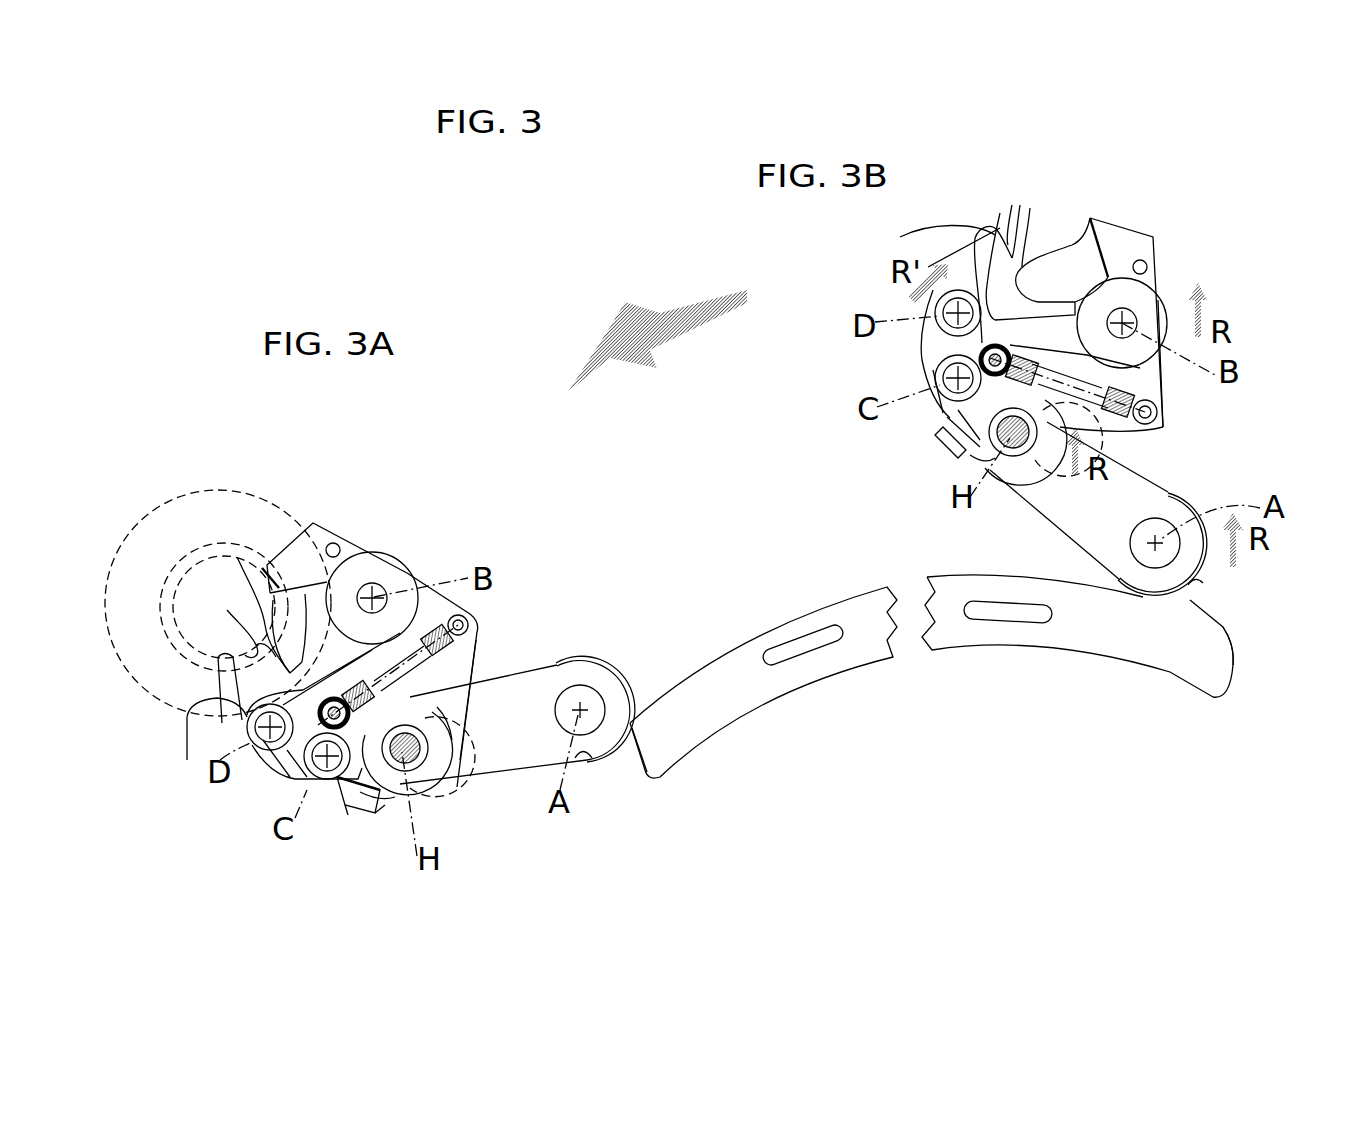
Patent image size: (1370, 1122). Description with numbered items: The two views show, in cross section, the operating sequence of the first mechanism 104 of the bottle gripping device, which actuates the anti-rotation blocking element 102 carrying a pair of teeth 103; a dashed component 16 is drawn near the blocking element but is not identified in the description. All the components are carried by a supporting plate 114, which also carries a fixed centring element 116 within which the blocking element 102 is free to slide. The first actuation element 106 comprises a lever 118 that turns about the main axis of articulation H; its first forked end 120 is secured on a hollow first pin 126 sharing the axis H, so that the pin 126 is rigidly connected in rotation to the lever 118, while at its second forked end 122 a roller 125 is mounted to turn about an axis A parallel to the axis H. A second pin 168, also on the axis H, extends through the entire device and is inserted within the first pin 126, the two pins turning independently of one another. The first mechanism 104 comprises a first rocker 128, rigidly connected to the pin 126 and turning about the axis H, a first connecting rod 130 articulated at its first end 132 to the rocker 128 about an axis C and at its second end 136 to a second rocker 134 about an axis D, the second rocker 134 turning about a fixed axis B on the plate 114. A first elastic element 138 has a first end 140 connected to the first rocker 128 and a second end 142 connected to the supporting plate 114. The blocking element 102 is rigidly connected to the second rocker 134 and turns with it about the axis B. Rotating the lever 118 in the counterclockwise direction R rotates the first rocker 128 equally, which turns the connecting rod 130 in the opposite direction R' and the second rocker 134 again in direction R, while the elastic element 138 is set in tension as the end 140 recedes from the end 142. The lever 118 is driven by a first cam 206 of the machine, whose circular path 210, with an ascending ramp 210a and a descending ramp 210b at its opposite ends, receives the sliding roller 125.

In FIG. 3A, the rear sprocket / hub axle 16 is at (189, 490).
In FIG. 3A, the anti-rotation blocking element 102 is at (237, 557).
In FIG. 3B, the anti-rotation blocking element 102 is at (985, 245).
In FIG. 3A, the teeth 103 is at (240, 620).
In FIG. 3B, the teeth 103 is at (1022, 267).
In FIG. 3A, the first mechanism 104 is at (470, 548).
In FIG. 3B, the first mechanism 104 is at (1250, 305).
In FIG. 3B, the first actuation element 106 is at (1010, 522).
In FIG. 3A, the supporting plate 114 is at (307, 547).
In FIG. 3B, the supporting plate 114 is at (1125, 245).
In FIG. 3A, the fixed centring element 116 is at (247, 568).
In FIG. 3B, the fixed centring element 116 is at (1048, 235).
In FIG. 3A, the lever 118 is at (533, 775).
In FIG. 3B, the lever 118 is at (1177, 480).
In FIG. 3A, the first forked end 120 is at (350, 805).
In FIG. 3B, the first forked end 120 is at (940, 410).
In FIG. 3A, the second forked end 122 is at (587, 762).
In FIG. 3B, the second forked end 122 is at (1190, 587).
In FIG. 3A, the roller 125 is at (613, 780).
In FIG. 3B, the roller 125 is at (1208, 568).
In FIG. 3A, the first pin 126 is at (443, 745).
In FIG. 3B, the first pin 126 is at (1090, 448).
In FIG. 3A, the first rocker 128 is at (380, 817).
In FIG. 3B, the first rocker 128 is at (980, 450).
In FIG. 3A, the first connecting rod 130 is at (290, 757).
In FIG. 3B, the first connecting rod 130 is at (937, 343).
In FIG. 3A, the first end 132 is at (353, 797).
In FIG. 3B, the first end 132 is at (935, 436).
In FIG. 3A, the second rocker 134 is at (353, 570).
In FIG. 3B, the second rocker 134 is at (1142, 297).
In FIG. 3A, the second end 136 is at (187, 760).
In FIG. 3B, the second end 136 is at (900, 237).
In FIG. 3A, the first elastic element 138 is at (440, 598).
In FIG. 3B, the first elastic element 138 is at (1172, 400).
In FIG. 3A, the first end 140 is at (415, 690).
In FIG. 3B, the first end 140 is at (980, 352).
In FIG. 3A, the second end 142 is at (468, 628).
In FIG. 3B, the second end 142 is at (1160, 413).
In FIG. 3A, the second pin 168 is at (450, 770).
In FIG. 3B, the second pin 168 is at (1020, 457).
In FIG. 3A, the first cam 206 is at (753, 692).
In FIG. 3B, the first cam 206 is at (1072, 640).
In FIG. 3A, the path 210 is at (797, 612).
In FIG. 3B, the path 210 is at (1085, 578).
In FIG. 3B, the ascending ramp 210a is at (1233, 632).
In FIG. 3A, the descending ramp 210b is at (670, 687).